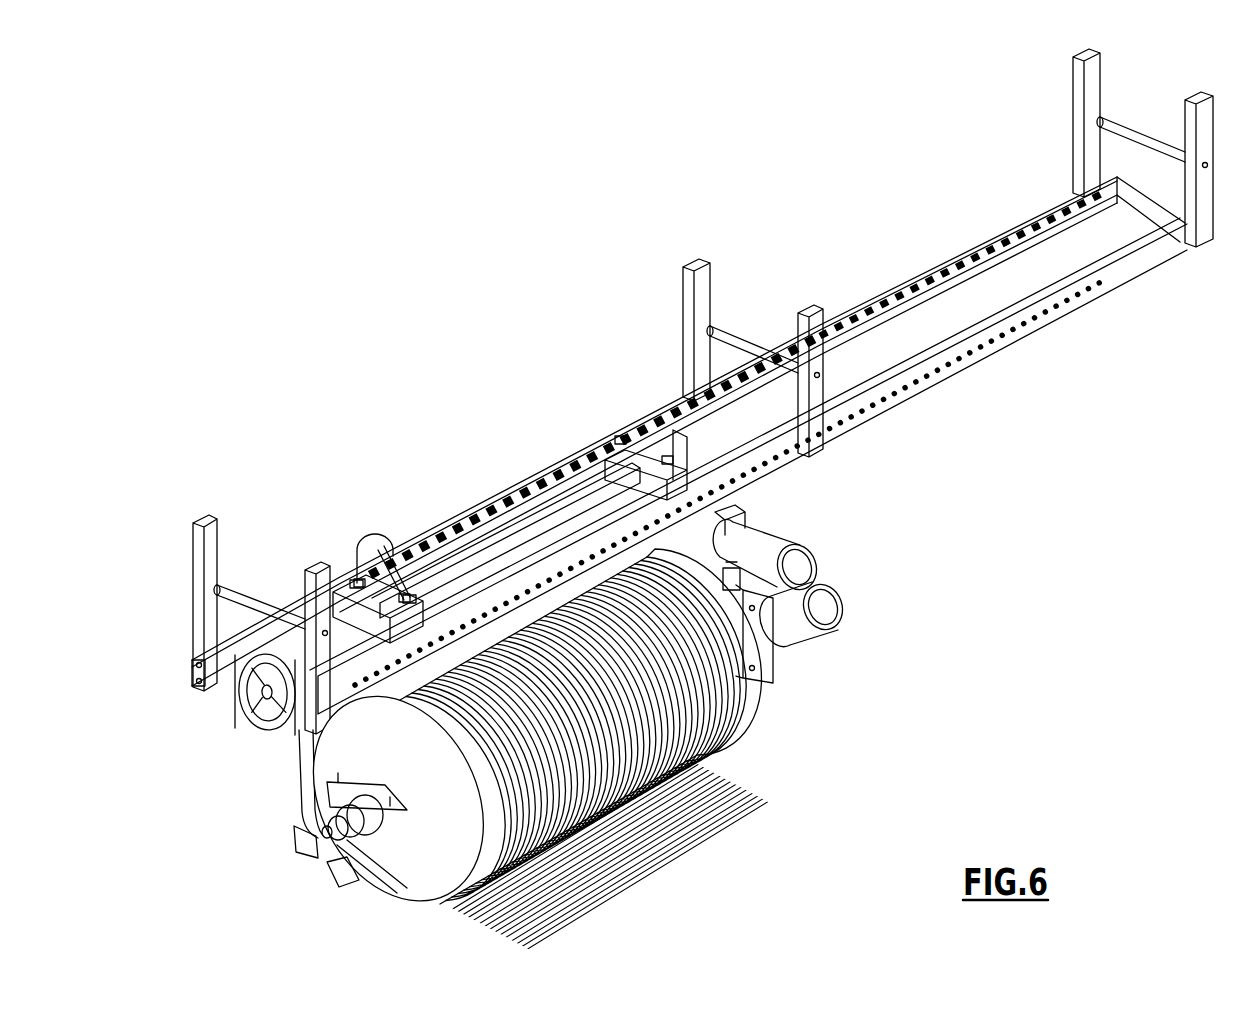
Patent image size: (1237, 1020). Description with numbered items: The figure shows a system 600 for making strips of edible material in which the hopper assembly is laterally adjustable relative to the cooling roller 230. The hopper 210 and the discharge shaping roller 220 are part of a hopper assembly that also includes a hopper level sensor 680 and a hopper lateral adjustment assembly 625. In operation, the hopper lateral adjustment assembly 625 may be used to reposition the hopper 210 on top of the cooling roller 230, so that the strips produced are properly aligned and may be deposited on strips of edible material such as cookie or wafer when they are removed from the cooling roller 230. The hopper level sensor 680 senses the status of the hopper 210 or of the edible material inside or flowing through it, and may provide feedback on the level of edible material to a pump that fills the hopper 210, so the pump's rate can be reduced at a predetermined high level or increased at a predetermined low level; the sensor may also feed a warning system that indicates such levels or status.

The tank transport and handling assembly 600 is at (412, 267).
The hopper 210 is at (567, 540).
The discharge shaping roller 220 is at (728, 516).
The cooling roller 230 is at (763, 708).
The hopper lateral adjustment assembly 625 is at (262, 722).
The hopper level sensor 680 is at (370, 540).